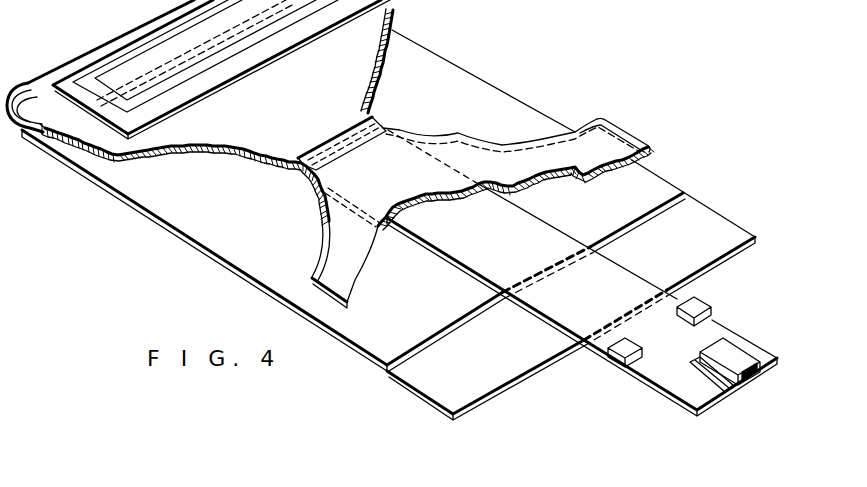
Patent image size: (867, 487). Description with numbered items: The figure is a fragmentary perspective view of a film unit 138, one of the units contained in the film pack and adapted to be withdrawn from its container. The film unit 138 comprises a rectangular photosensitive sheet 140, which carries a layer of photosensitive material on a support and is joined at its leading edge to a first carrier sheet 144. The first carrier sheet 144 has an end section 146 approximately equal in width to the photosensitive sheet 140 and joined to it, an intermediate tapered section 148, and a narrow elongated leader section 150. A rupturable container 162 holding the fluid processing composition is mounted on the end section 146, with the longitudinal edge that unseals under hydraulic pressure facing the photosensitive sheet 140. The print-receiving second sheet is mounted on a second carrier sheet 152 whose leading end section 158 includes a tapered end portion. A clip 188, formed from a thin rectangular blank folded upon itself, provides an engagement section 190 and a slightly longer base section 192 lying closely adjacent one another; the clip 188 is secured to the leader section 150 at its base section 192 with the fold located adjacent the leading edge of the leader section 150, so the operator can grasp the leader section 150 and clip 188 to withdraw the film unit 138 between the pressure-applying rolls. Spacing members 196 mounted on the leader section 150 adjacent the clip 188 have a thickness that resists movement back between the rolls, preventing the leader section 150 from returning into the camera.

The film unit 138 is at (518, 85).
The photosensitive sheet 140 is at (273, 225).
The first carrier sheet 144 is at (168, 156).
The end section 146 is at (124, 146).
The intermediate tapered section 148 is at (305, 123).
The leader section 150 is at (498, 246).
The second carrier sheet 152 is at (630, 137).
The leading end section 158 is at (525, 175).
The rupturable container 162 is at (120, 77).
The clip 188 is at (705, 359).
The engagement section 190 is at (720, 350).
The base section 192 is at (692, 367).
The spacing members 196 is at (693, 304).